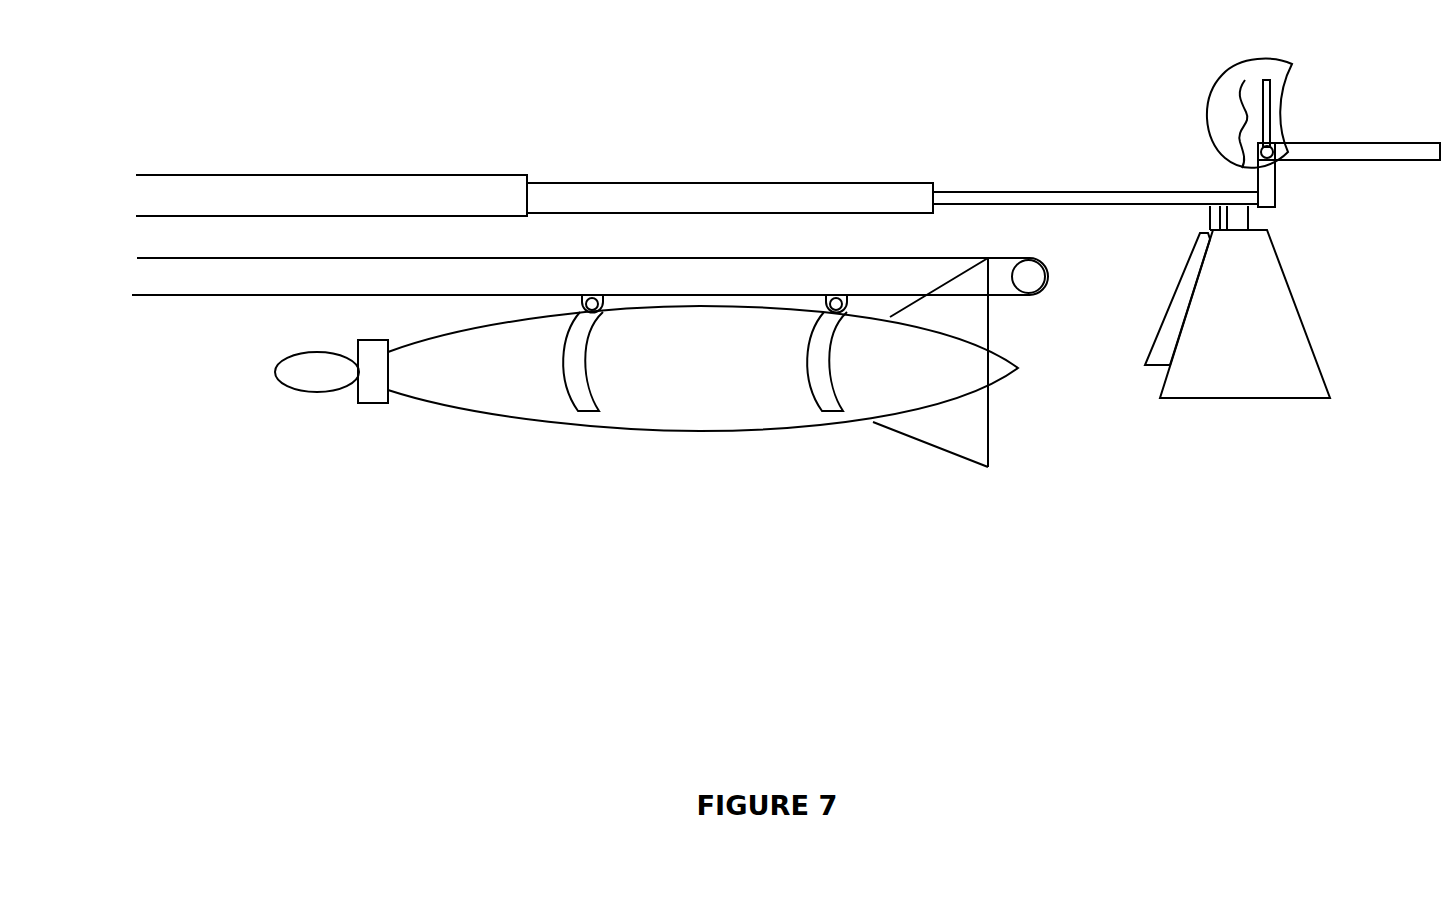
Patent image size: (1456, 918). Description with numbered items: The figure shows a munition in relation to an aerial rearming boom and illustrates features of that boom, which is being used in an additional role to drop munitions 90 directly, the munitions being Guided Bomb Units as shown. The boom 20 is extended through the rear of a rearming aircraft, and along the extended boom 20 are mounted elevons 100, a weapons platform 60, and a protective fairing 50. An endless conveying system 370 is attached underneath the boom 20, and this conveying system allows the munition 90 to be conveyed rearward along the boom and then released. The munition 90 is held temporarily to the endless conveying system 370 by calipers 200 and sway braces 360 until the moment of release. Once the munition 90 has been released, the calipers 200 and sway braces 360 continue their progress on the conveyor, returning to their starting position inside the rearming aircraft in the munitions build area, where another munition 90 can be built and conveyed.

The boom 20 is at (340, 174).
The protective fairing 50 is at (1218, 80).
The weapons platform 60 is at (1347, 138).
The munition 90 is at (740, 432).
The elevons 100 is at (1152, 368).
The calipers 200 is at (566, 401).
The sway braces 360 is at (614, 297).
The endless conveying system 370 is at (1010, 301).